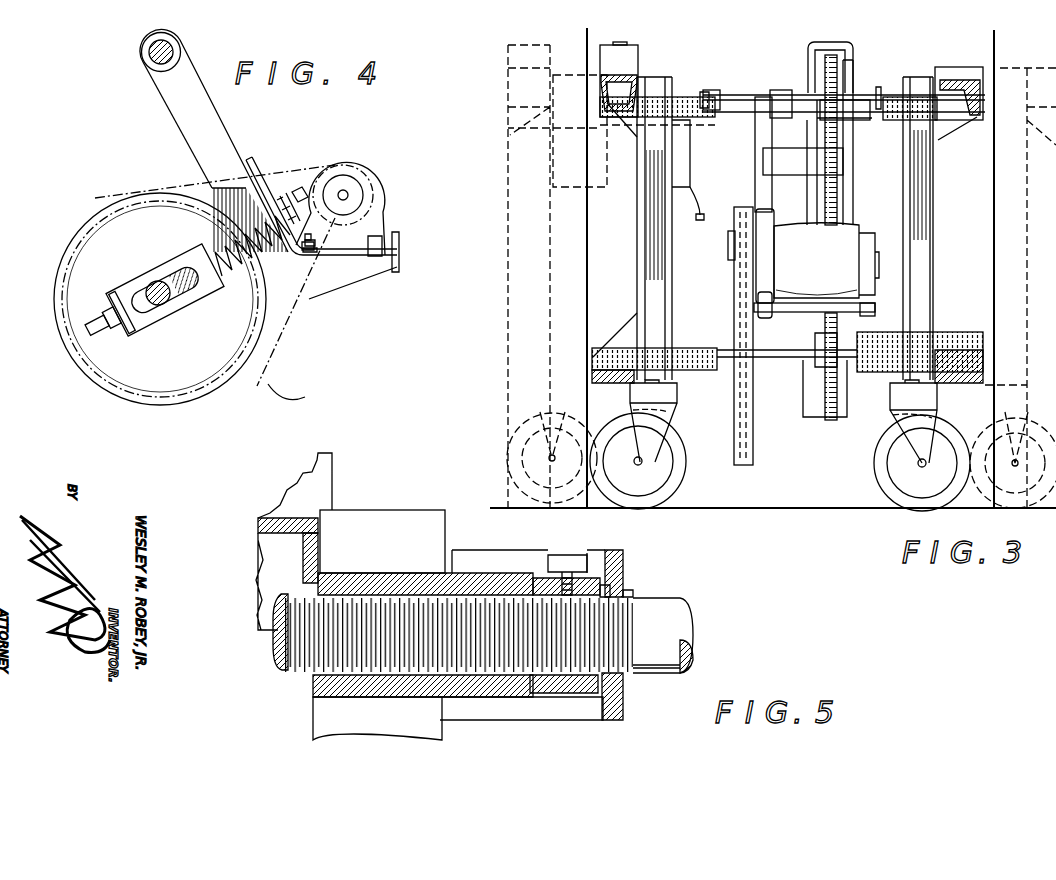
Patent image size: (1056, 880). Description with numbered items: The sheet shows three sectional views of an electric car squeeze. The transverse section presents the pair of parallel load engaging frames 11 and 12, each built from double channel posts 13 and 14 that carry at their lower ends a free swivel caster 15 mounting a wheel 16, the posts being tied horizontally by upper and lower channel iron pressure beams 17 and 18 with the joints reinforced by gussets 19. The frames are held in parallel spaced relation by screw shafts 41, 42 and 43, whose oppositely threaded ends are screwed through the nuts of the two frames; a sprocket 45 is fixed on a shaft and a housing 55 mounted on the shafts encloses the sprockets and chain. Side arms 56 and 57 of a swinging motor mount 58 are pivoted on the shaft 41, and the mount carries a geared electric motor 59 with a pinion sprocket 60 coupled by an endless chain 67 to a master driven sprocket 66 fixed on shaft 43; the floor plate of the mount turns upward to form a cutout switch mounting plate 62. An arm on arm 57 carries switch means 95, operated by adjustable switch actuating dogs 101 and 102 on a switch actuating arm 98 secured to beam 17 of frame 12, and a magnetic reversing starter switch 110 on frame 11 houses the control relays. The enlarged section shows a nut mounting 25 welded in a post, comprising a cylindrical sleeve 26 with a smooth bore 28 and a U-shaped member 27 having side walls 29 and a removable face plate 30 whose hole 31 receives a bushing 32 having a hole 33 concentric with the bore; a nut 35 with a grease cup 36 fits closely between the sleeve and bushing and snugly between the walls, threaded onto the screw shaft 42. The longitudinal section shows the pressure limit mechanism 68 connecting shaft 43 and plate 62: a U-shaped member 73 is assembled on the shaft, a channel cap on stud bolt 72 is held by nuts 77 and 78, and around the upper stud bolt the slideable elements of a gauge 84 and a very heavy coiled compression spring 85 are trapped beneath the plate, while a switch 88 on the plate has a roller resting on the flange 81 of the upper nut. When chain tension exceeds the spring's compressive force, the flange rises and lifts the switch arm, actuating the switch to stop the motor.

In FIG. 3, the load engaging frame 11 is at (678, 75).
In FIG. 3, the load engaging frame 12 is at (928, 66).
In FIG. 3, the double channel post 13 is at (935, 197).
In FIG. 5, the double channel post 14 is at (362, 512).
In FIG. 3, the free swivel caster 15 is at (895, 412).
In FIG. 3, the wheel 16 is at (880, 468).
In FIG. 3, the upper channel iron pressure beam 17 is at (625, 85).
In FIG. 3, the lower channel iron pressure beam 18 is at (622, 380).
In FIG. 3, the gusset 19 is at (940, 118).
In FIG. 5, the nut mounting 25 is at (486, 540).
In FIG. 5, the cylindrical sleeve 26 is at (372, 573).
In FIG. 5, the U-shaped member 27 is at (523, 559).
In FIG. 5, the smooth bore 28 is at (408, 580).
In FIG. 5, the side wall 29 is at (597, 553).
In FIG. 5, the face plate 30 is at (623, 558).
In FIG. 5, the hole 31 is at (623, 585).
In FIG. 5, the bushing 32 is at (633, 592).
In FIG. 5, the hole 33 is at (623, 675).
In FIG. 5, the nut 35 is at (555, 697).
In FIG. 5, the grease cup 36 is at (565, 556).
In FIG. 4, the screw shaft 41 is at (142, 58).
In FIG. 3, the screw shaft 41 is at (797, 80).
In FIG. 5, the screw shaft 42 is at (695, 612).
In FIG. 4, the screw shaft 43 is at (160, 305).
In FIG. 3, the screw shaft 43 is at (770, 338).
In FIG. 3, the sprocket 45 is at (850, 103).
In FIG. 3, the housing 55 is at (850, 60).
In FIG. 4, the side arm 56 is at (158, 88).
In FIG. 3, the side arm 56 is at (755, 142).
In FIG. 3, the side arm 57 is at (852, 155).
In FIG. 3, the swinging motor mount 58 is at (858, 300).
In FIG. 4, the geared electric motor 59 is at (380, 165).
In FIG. 3, the geared electric motor 59 is at (850, 235).
In FIG. 3, the pinion sprocket 60 is at (728, 242).
In FIG. 4, the cutout switch mounting plate 62 is at (256, 168).
In FIG. 3, the master driven sprocket 66 is at (733, 383).
In FIG. 4, the endless chain 67 is at (310, 318).
In FIG. 4, the pressure limit mechanism 68 is at (149, 160).
In FIG. 4, the stud bolt 72 is at (94, 325).
In FIG. 4, the U-shaped member 73 is at (128, 285).
In FIG. 4, the nut 77 is at (124, 322).
In FIG. 4, the nut 78 is at (102, 305).
In FIG. 4, the flange 81 is at (302, 240).
In FIG. 4, the gauge 84 is at (215, 238).
In FIG. 4, the coiled compression spring 85 is at (228, 270).
In FIG. 4, the switch 88 is at (294, 188).
In FIG. 3, the switch means 95 is at (817, 120).
In FIG. 3, the switch actuating arm 98 is at (780, 90).
In FIG. 3, the adjustable switch actuating dog 101 is at (880, 90).
In FIG. 3, the adjustable switch actuating dog 102 is at (710, 92).
In FIG. 3, the magnetic reversing starter switch 110 is at (690, 176).